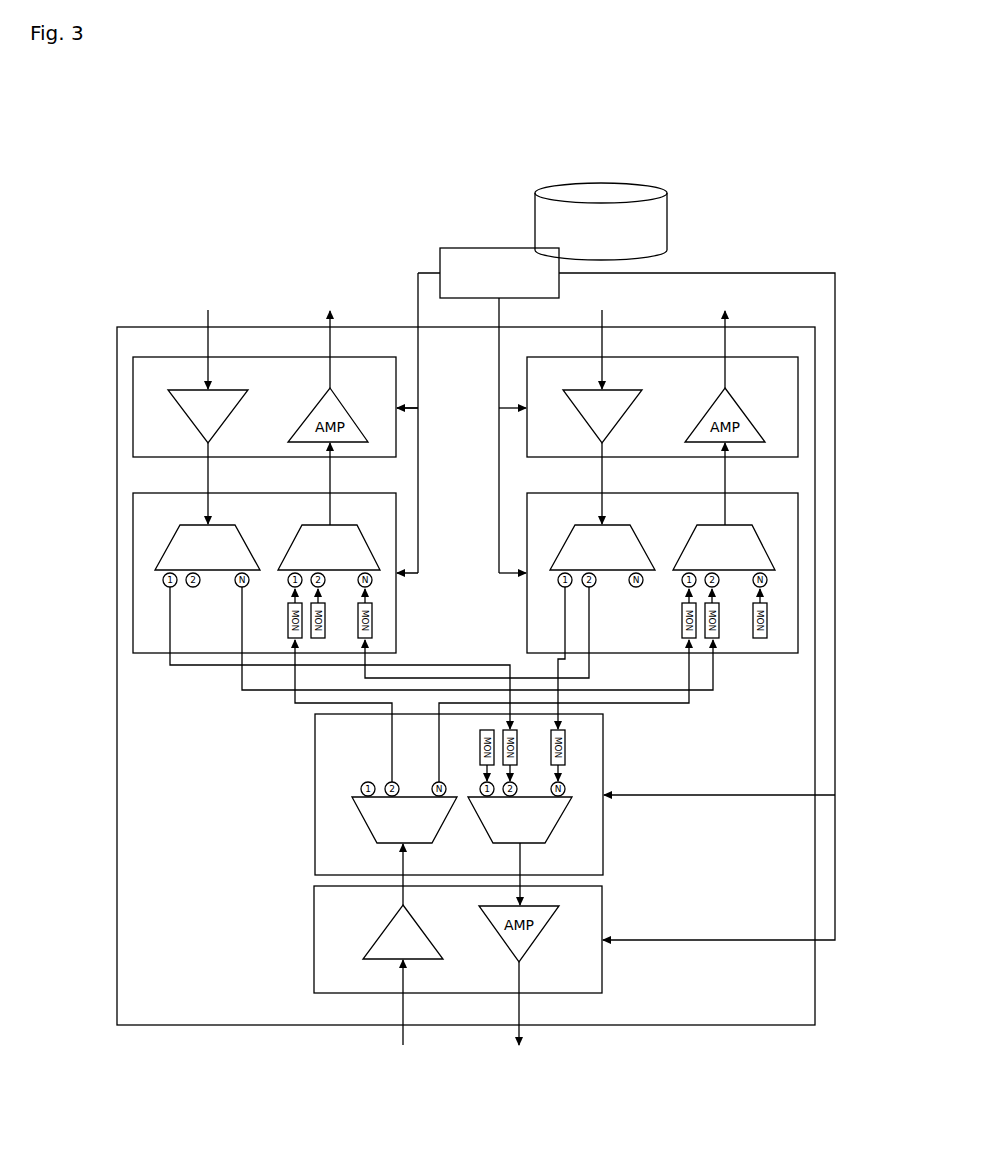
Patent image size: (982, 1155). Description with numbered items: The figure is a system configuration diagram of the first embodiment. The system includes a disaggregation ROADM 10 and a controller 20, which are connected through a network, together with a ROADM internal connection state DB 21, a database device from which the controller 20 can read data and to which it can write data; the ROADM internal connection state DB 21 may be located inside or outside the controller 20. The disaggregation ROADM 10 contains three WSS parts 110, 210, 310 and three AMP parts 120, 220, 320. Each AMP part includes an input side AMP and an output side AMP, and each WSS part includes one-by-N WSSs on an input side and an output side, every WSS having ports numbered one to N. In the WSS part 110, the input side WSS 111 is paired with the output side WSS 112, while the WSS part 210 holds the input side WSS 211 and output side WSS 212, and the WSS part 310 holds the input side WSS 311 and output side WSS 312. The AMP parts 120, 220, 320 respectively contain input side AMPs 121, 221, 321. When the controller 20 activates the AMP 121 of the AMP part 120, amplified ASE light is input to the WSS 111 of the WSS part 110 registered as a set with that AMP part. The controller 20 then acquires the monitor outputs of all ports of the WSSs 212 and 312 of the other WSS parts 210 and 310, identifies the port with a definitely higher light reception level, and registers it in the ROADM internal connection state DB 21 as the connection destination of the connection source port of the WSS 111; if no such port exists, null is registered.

The disaggregation ROADM 10 is at (130, 327).
The controller 20 is at (490, 248).
The ROADM internal connection state DB 21 is at (610, 183).
The WSS part 110 is at (315, 790).
The WSS 111 is at (442, 827).
The WSS 112 is at (557, 827).
The AMP part 120 is at (314, 936).
The AMP 121 is at (383, 932).
The WSS part 210 is at (350, 493).
The WSS 211 is at (228, 525).
The WSS 212 is at (345, 525).
The AMP part 220 is at (350, 357).
The AMP 221 is at (228, 390).
The WSS part 310 is at (748, 493).
The WSS 311 is at (622, 525).
The WSS 312 is at (740, 525).
The AMP part 320 is at (748, 357).
The AMP 321 is at (622, 390).